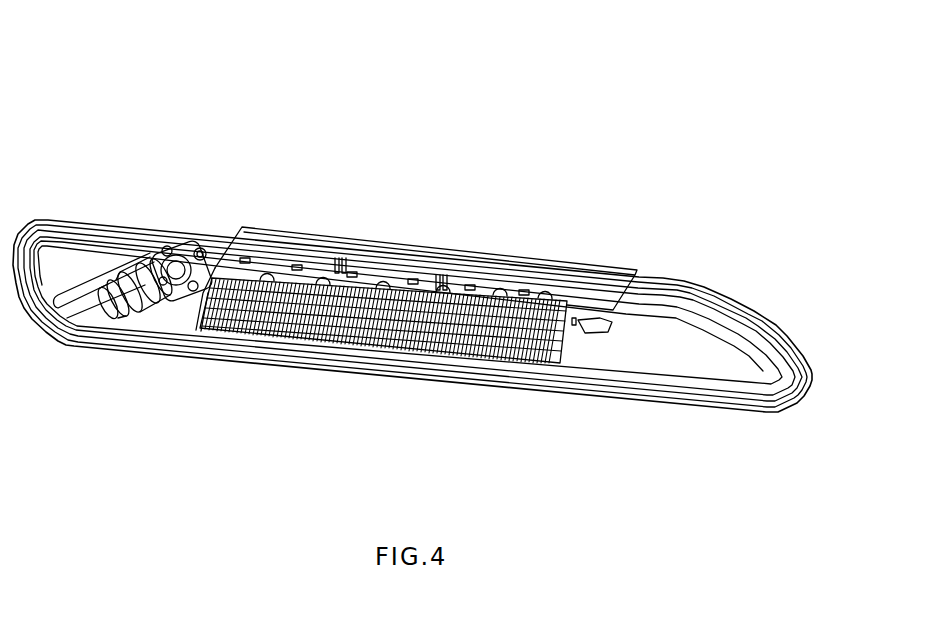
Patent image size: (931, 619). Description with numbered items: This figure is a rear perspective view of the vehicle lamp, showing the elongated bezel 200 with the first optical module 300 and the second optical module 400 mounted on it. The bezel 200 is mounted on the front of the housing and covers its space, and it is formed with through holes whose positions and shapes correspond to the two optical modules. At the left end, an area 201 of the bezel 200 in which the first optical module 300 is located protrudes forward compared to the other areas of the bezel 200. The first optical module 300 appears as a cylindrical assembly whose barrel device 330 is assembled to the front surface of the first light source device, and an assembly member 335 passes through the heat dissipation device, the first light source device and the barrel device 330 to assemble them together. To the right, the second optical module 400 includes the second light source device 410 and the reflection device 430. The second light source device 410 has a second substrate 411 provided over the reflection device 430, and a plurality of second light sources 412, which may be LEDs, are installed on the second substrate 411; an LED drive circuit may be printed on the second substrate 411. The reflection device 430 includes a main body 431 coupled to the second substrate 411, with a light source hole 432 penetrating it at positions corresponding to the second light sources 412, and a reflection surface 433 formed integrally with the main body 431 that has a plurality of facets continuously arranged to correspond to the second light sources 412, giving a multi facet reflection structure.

The bezel 200 is at (115, 228).
The area of the bezel 201 is at (66, 248).
The first optical module 300 is at (171, 198).
The barrel device 330 is at (158, 247).
The assembly member 335 is at (203, 248).
The second optical module 400 is at (427, 256).
The second light source device 410 is at (446, 222).
The second substrate 411 is at (575, 262).
The second light sources 412 is at (293, 272).
The reflection device 430 is at (369, 353).
The main body 431 is at (197, 335).
The light source hole 432 is at (483, 297).
The reflection surface 433 is at (459, 362).